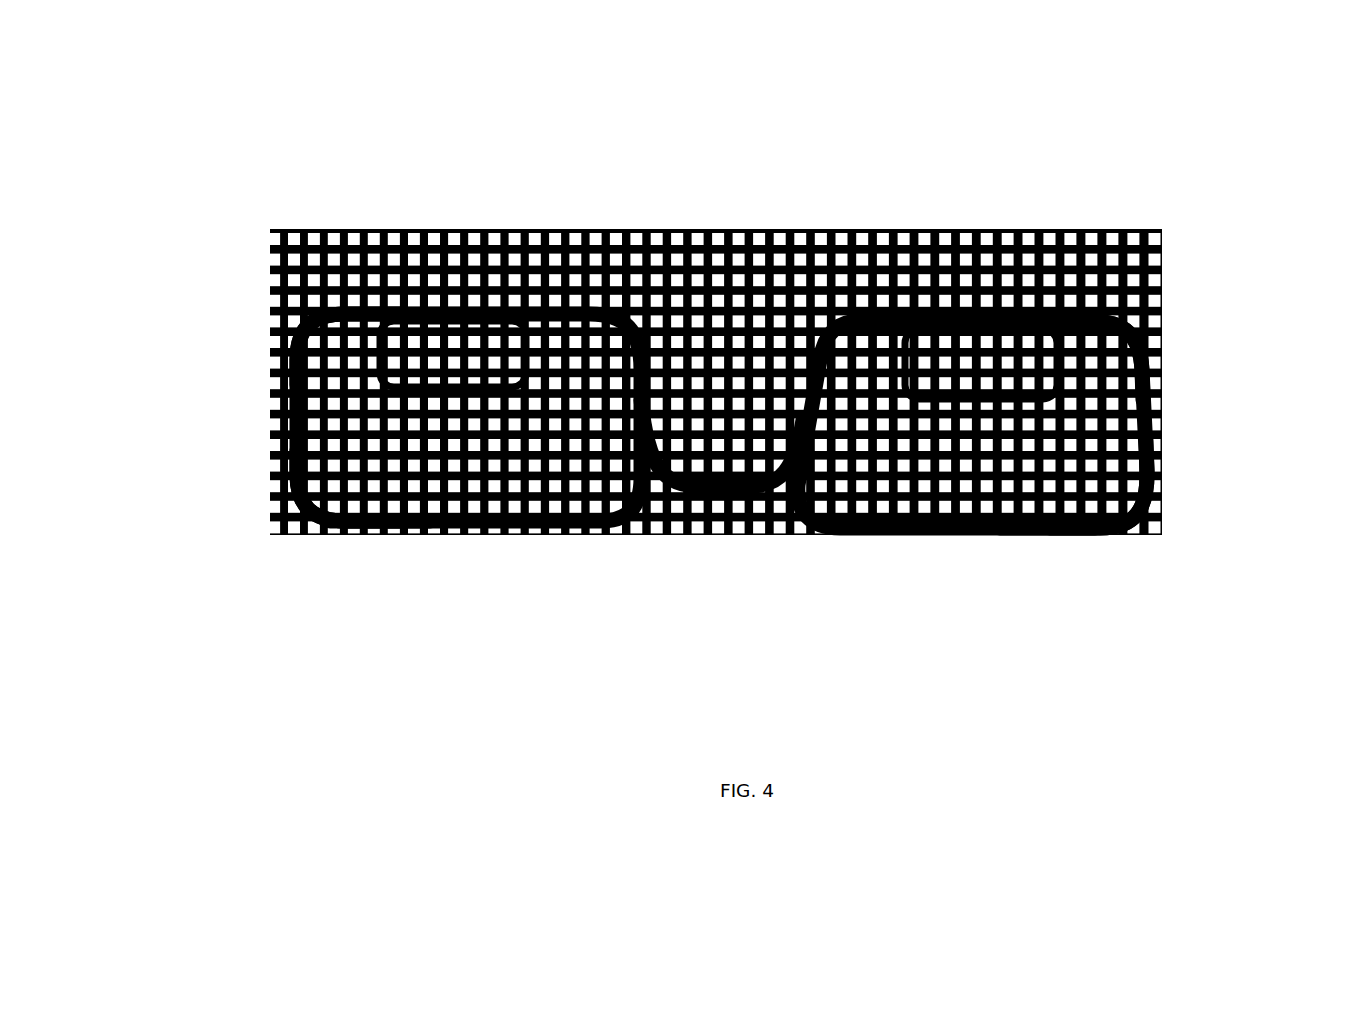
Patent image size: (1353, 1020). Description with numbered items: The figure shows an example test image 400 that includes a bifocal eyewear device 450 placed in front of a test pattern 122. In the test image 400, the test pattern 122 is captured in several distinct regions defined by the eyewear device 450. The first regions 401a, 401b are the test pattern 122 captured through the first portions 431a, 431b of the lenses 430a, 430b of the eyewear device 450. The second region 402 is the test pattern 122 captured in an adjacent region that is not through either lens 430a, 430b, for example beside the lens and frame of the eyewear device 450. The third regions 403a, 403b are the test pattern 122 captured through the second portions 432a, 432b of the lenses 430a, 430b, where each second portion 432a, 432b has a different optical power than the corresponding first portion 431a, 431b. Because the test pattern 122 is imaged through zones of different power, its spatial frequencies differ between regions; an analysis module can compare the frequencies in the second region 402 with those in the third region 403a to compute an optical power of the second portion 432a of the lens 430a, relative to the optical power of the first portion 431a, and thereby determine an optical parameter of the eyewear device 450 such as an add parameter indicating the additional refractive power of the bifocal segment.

The test image 400 is at (176, 63).
The test pattern 122 is at (1145, 225).
The eyewear device 450 is at (715, 452).
The lens 430a is at (1053, 447).
The lens 430b is at (380, 462).
The second region 402 is at (763, 537).
The first region 401a is at (1083, 535).
The first region 401b is at (333, 530).
The third region 403a is at (992, 372).
The third region 403b is at (466, 380).
The first portion 431a is at (1140, 483).
The first portion 431b is at (290, 500).
The second portion 432a is at (1135, 309).
The second portion 432b is at (307, 303).